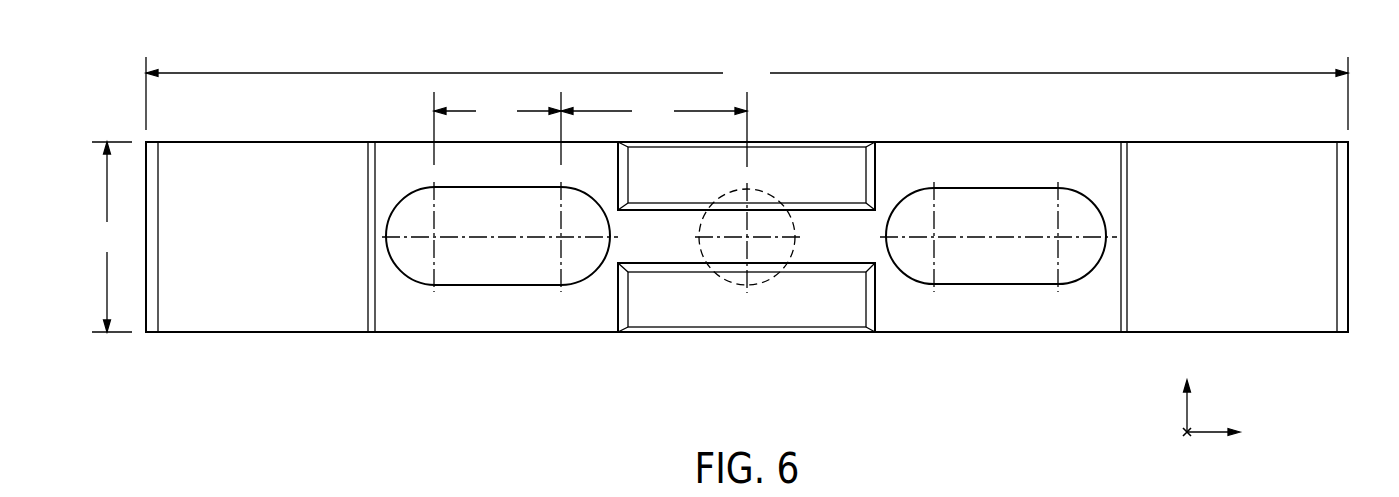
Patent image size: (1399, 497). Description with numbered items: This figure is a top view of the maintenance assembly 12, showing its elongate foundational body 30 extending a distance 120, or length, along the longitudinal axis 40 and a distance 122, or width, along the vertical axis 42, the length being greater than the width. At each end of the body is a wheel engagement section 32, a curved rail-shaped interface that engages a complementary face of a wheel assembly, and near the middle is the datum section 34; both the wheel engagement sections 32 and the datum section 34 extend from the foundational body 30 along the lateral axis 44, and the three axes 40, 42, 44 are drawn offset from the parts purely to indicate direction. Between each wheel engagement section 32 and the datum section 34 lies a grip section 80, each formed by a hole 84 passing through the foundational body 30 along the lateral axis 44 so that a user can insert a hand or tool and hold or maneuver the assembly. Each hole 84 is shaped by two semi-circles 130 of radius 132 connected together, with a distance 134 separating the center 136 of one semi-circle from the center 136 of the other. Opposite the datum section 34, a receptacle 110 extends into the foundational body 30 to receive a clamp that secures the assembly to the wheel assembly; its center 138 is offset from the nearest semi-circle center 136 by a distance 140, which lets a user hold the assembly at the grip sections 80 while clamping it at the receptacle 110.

The maintenance assembly 12 is at (1298, 46).
The foundational body 30 is at (1350, 237).
The wheel engagement section 32 is at (264, 343).
The datum section 34 is at (839, 345).
The longitudinal axis 40 is at (1183, 431).
The vertical axis 42 is at (1186, 411).
The lateral axis 44 is at (1186, 432).
The grip section 80 is at (511, 345).
The hole 84 is at (529, 297).
The receptacle 110 is at (702, 250).
The distance 120 is at (747, 93).
The distance 122 is at (110, 237).
The semi-circle 130 is at (412, 283).
The radius 132 is at (401, 194).
The distance 134 is at (497, 128).
The center 136 is at (436, 237).
The center 138 is at (747, 237).
The distance 140 is at (654, 129).